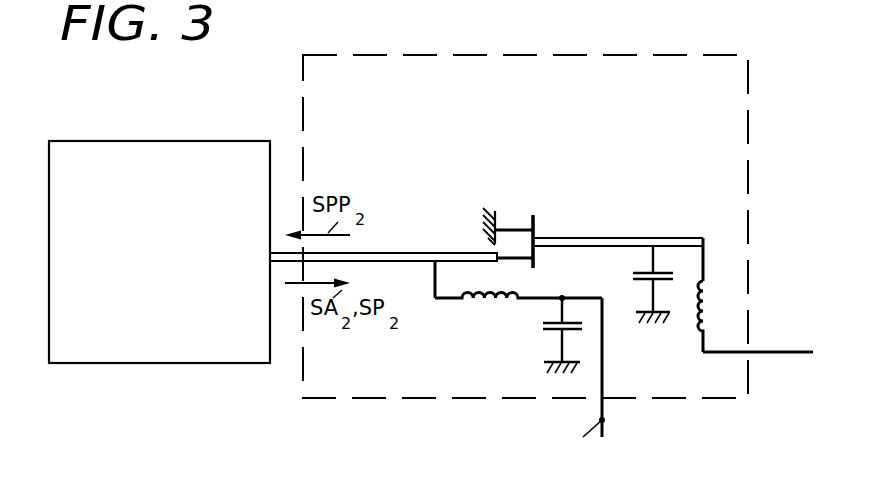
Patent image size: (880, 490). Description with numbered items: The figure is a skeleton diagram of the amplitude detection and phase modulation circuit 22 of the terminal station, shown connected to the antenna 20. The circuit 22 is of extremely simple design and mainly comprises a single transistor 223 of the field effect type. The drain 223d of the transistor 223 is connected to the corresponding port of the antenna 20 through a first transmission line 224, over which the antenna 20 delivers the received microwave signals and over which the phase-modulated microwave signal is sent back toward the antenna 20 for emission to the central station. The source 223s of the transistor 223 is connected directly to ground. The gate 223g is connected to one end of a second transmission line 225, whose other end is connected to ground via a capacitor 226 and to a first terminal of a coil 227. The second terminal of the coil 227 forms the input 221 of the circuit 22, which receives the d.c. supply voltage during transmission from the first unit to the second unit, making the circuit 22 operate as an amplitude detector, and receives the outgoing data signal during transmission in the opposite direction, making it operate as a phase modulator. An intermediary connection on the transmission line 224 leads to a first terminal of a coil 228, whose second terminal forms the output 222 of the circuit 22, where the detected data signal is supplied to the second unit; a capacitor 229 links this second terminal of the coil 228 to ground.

The antenna 20 is at (110, 149).
The amplitude detection and phase modulation circuit 22 is at (313, 100).
The input 221 is at (758, 349).
The output 222 is at (603, 400).
The transistor 223 is at (551, 212).
The source 223s is at (513, 223).
The drain 223d is at (517, 260).
The gate 223g is at (542, 229).
The first transmission line 224 is at (453, 252).
The second transmission line 225 is at (667, 237).
The capacitor 226 is at (650, 273).
The coil 227 is at (697, 320).
The coil 228 is at (497, 310).
The capacitor 229 is at (555, 333).